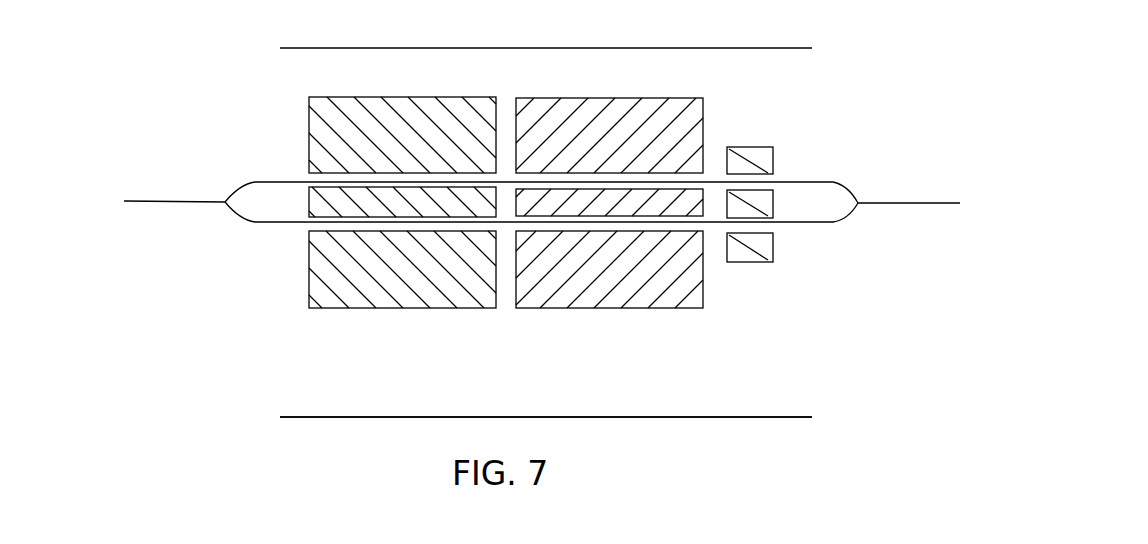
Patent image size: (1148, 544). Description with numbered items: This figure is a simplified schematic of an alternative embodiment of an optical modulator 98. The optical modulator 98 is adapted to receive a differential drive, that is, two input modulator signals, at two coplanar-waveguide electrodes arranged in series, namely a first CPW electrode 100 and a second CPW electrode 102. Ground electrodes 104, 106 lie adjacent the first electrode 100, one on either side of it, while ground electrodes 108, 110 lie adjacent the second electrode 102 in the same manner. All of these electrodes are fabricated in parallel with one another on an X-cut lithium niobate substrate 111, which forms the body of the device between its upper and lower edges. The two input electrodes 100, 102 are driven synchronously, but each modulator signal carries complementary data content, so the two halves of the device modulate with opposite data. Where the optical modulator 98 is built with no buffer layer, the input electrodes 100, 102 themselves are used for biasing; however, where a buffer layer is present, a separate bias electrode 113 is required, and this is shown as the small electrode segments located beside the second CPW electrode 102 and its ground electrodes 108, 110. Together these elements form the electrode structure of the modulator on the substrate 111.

The optical modulator 98 is at (626, 35).
The CPW electrode 100 is at (327, 204).
The CPW electrode 102 is at (690, 205).
The ground electrode 104 is at (382, 127).
The ground electrode 106 is at (368, 295).
The ground electrode 108 is at (643, 118).
The ground electrode 110 is at (573, 293).
The X-cut LiNbO3 substrate 111 is at (375, 393).
The bias electrode 113 is at (758, 205).